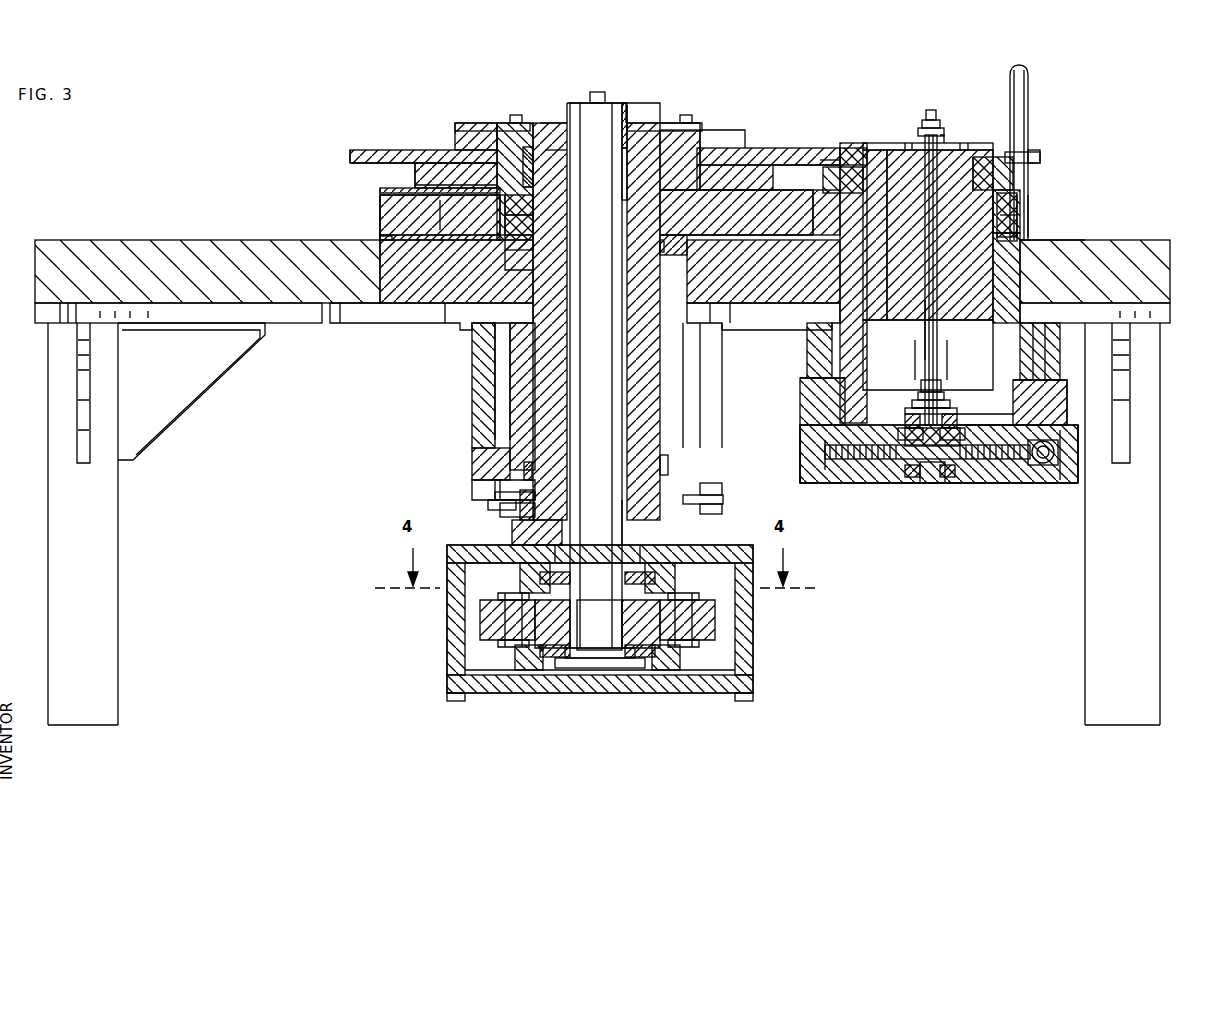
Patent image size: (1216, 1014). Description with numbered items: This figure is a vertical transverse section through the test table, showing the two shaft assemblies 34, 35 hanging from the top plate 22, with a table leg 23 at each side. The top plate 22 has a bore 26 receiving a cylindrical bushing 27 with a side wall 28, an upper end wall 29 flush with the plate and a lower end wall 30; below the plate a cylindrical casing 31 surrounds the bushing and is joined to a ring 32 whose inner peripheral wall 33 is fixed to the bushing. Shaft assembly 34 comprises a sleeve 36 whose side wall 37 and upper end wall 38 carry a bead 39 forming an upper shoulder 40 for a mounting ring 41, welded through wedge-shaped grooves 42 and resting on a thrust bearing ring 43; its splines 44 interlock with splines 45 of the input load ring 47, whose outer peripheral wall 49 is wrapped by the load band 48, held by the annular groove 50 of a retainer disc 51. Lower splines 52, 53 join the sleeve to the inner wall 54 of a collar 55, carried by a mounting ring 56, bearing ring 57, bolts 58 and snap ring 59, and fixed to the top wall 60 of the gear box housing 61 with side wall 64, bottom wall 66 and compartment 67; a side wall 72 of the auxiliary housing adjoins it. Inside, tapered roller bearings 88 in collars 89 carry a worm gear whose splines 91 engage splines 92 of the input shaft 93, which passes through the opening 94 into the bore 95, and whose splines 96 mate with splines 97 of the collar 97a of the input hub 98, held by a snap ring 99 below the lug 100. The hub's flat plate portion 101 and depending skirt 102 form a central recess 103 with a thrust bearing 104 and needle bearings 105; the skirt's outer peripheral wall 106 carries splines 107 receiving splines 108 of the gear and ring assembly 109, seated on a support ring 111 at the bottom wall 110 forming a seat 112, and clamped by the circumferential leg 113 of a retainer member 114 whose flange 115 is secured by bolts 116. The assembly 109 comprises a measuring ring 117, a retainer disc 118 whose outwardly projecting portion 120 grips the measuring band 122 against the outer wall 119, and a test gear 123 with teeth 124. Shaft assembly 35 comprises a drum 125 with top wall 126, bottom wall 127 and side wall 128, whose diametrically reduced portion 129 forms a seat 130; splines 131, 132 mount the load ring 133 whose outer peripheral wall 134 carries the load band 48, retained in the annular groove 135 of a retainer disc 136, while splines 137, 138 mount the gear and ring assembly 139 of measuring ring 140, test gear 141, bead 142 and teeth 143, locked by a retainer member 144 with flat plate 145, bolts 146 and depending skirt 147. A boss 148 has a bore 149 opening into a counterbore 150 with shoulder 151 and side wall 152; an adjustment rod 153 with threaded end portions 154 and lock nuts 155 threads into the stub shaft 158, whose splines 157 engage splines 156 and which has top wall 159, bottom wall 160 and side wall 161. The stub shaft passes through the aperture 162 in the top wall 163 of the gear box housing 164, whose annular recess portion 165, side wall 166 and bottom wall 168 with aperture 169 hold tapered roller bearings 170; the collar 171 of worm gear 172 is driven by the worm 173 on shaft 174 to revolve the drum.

The top plate 22 is at (135, 268).
The table leg 23 is at (55, 405).
The bore 26 is at (420, 316).
The cylindrical bushing 27 is at (366, 316).
The side wall 28 is at (431, 323).
The upper end wall 29 is at (456, 271).
The lower end wall 30 is at (576, 411).
The cylindrical casing 31 is at (462, 385).
The ring 32 is at (446, 488).
The inner peripheral wall 33 is at (466, 461).
The shaft assembly 34 is at (658, 125).
The shaft assembly 35 is at (955, 180).
The cylindrical sleeve 36 is at (596, 321).
The side wall 37 is at (512, 378).
The upper end wall 38 is at (522, 159).
The peripheral bead 39 is at (690, 220).
The upper shoulder 40 is at (667, 165).
The mounting ring 41 is at (526, 222).
The wedge-shaped groove 42 is at (531, 203).
The thrust bearing ring 43 is at (525, 250).
The splines 44 is at (505, 218).
The splines 45 is at (445, 215).
The input load ring 47 is at (440, 215).
The load band 48 is at (385, 215).
The outer peripheral wall 49 is at (385, 205).
The annular groove 50 is at (392, 238).
The retainer disc 51 is at (380, 240).
The splines 52 is at (533, 495).
The splines 53 is at (510, 515).
The inner wall 54 is at (500, 506).
The collar 55 is at (532, 476).
The mounting ring 56 is at (700, 490).
The bearing ring 57 is at (690, 504).
The bolts 58 is at (710, 512).
The snap ring 59 is at (500, 496).
The top wall 60 is at (470, 552).
The gear box housing 61 is at (437, 624).
The side wall 64 is at (420, 673).
The bottom wall 66 is at (632, 695).
The compartment 67 is at (492, 680).
The side wall 72 is at (660, 262).
The tapered roller bearings 88 is at (660, 578).
The collars 89 is at (535, 578).
The splines 91 is at (618, 632).
The splines 92 is at (618, 612).
The input shaft 93 is at (596, 375).
The opening 94 is at (572, 552).
The bore 95 is at (625, 528).
The splines 96 is at (622, 140).
The splines 97 is at (622, 125).
The collar 97a is at (647, 105).
The input hub 98 is at (545, 123).
The snap ring 99 is at (628, 110).
The lug 100 is at (598, 92).
The flat plate portion 101 is at (700, 135).
The depending skirt 102 is at (712, 148).
The central recess 103 is at (672, 130).
The thrust bearing 104 is at (550, 150).
The needle bearings 105 is at (567, 167).
The outer peripheral wall 106 is at (480, 140).
The splines 107 is at (487, 120).
The splines 108 is at (470, 160).
The gear and ring assembly 109 is at (765, 155).
The bottom wall 110 is at (740, 160).
The support ring 111 is at (736, 212).
The seat 112 is at (760, 165).
The circumferential leg 113 is at (460, 150).
The retainer member 114 is at (497, 120).
The flange 115 is at (528, 120).
The bolts 116 is at (500, 118).
The measuring ring 117 is at (456, 175).
The retainer disc 118 is at (380, 190).
The outer wall 119 is at (415, 185).
The outwardly projecting portion 120 is at (400, 185).
The measuring band 122 is at (415, 175).
The test gear 123 is at (400, 150).
The teeth 124 is at (800, 150).
The drum 125 is at (928, 266).
The top wall 126 is at (872, 150).
The bottom wall 127 is at (955, 420).
The side wall 128 is at (1020, 336).
The diametrically reduced portion 129 is at (1013, 175).
The seat 130 is at (993, 215).
The splines 131 is at (1017, 215).
The splines 132 is at (1028, 222).
The load ring 133 is at (1017, 195).
The outer peripheral wall 134 is at (1028, 200).
The annular groove 135 is at (1028, 232).
The retainer disc 136 is at (1030, 238).
The splines 137 is at (1028, 130).
The splines 138 is at (1028, 145).
The gear and ring assembly 139 is at (1060, 160).
The measuring ring 140 is at (850, 165).
The test gear 141 is at (848, 150).
The bead 142 is at (815, 152).
The teeth 143 is at (1040, 160).
The retainer member 144 is at (940, 130).
The flat plate 145 is at (975, 143).
The bolts 146 is at (922, 143).
The depending skirt 147 is at (973, 157).
The boss 148 is at (931, 120).
The bore 149 is at (937, 270).
The counterbore 150 is at (940, 385).
The shoulder 151 is at (935, 380).
The side wall 152 is at (1020, 370).
The adjustment rod 153 is at (937, 300).
The threaded end portions 154 is at (912, 68).
The lock nuts 155 is at (899, 80).
The splines 156 is at (1040, 383).
The splines 157 is at (920, 378).
The stub shaft 158 is at (918, 400).
The top wall 159 is at (918, 390).
The bottom wall 160 is at (932, 483).
The side wall 161 is at (905, 432).
The aperture 162 is at (905, 420).
The top wall 163 is at (1060, 404).
The gear box housing 164 is at (1035, 500).
The annular recess portion 165 is at (1060, 420).
The side wall 166 is at (782, 454).
The bottom wall 168 is at (885, 483).
The aperture 169 is at (945, 483).
The tapered roller bearings 170 is at (970, 433).
The collar 171 is at (932, 437).
The worm gear 172 is at (855, 470).
The worm 173 is at (1058, 448).
The shaft 174 is at (1043, 465).